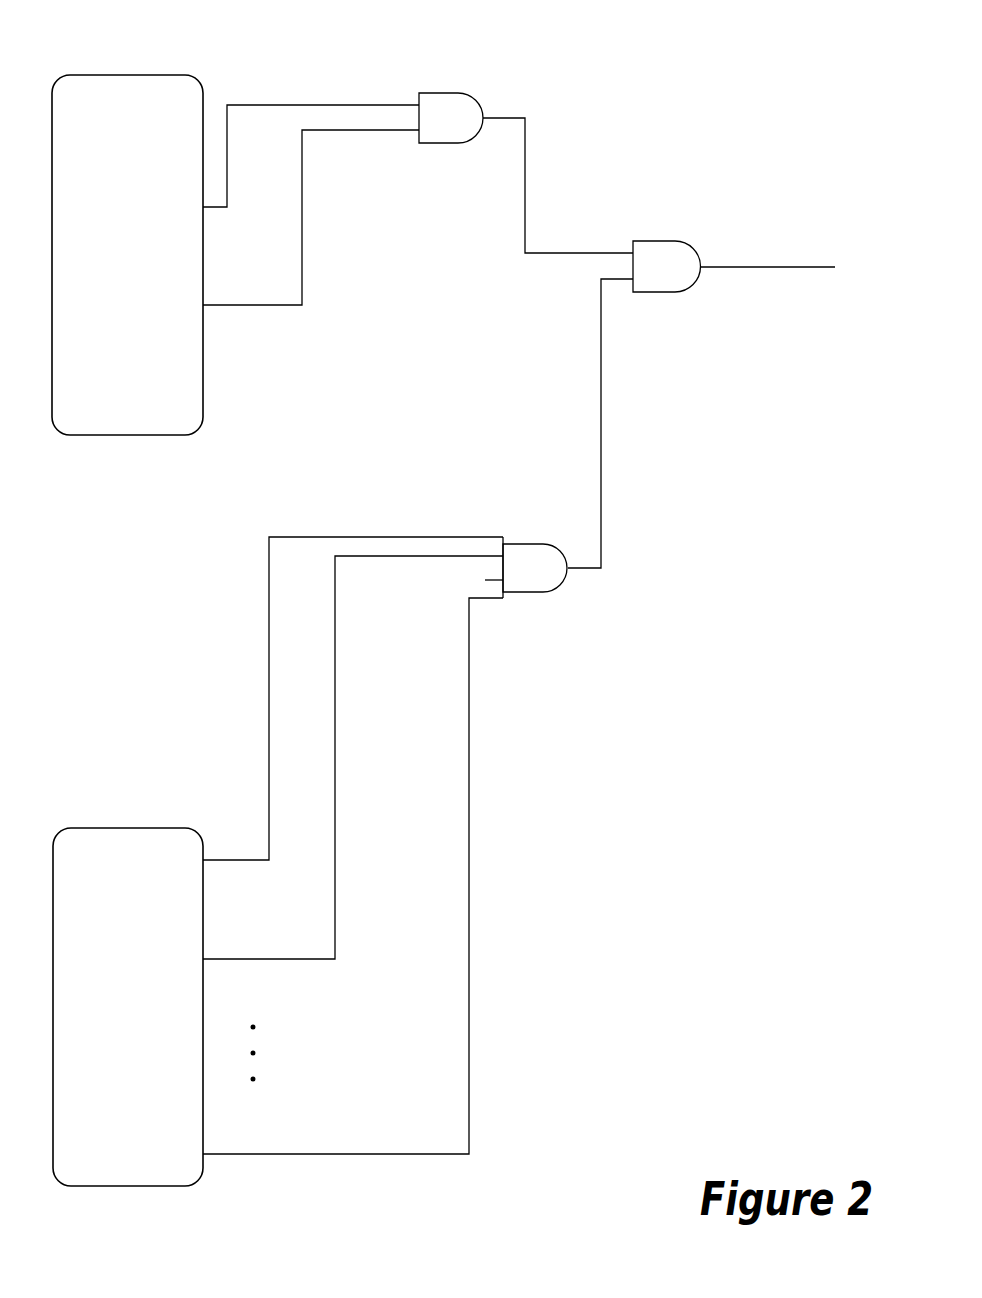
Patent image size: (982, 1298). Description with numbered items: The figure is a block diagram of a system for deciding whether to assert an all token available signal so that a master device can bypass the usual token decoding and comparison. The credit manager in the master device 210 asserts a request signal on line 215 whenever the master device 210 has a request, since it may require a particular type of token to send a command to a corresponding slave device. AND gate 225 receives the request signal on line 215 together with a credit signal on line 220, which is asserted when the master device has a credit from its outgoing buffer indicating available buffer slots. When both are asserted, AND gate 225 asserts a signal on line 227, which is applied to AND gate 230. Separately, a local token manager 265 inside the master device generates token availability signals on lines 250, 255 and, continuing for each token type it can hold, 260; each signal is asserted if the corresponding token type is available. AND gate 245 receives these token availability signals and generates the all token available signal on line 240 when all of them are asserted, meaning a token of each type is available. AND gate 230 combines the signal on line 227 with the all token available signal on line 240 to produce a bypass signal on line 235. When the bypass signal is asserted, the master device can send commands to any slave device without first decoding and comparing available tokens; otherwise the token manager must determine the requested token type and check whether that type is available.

The master device 210 is at (127, 255).
The request signal line 215 is at (250, 104).
The credit signal line 220 is at (303, 220).
The AND gate 225 is at (452, 93).
The AND gate output line 227 is at (525, 217).
The AND gate 230 is at (667, 241).
The bypass signal line 235 is at (777, 267).
The all token available signal line 240 is at (601, 422).
The AND gate 245 is at (535, 542).
The token availability signal line 250 is at (269, 625).
The token availability signal line 255 is at (335, 747).
The token availability signal line 260 is at (469, 997).
The local token manager 265 is at (128, 1007).